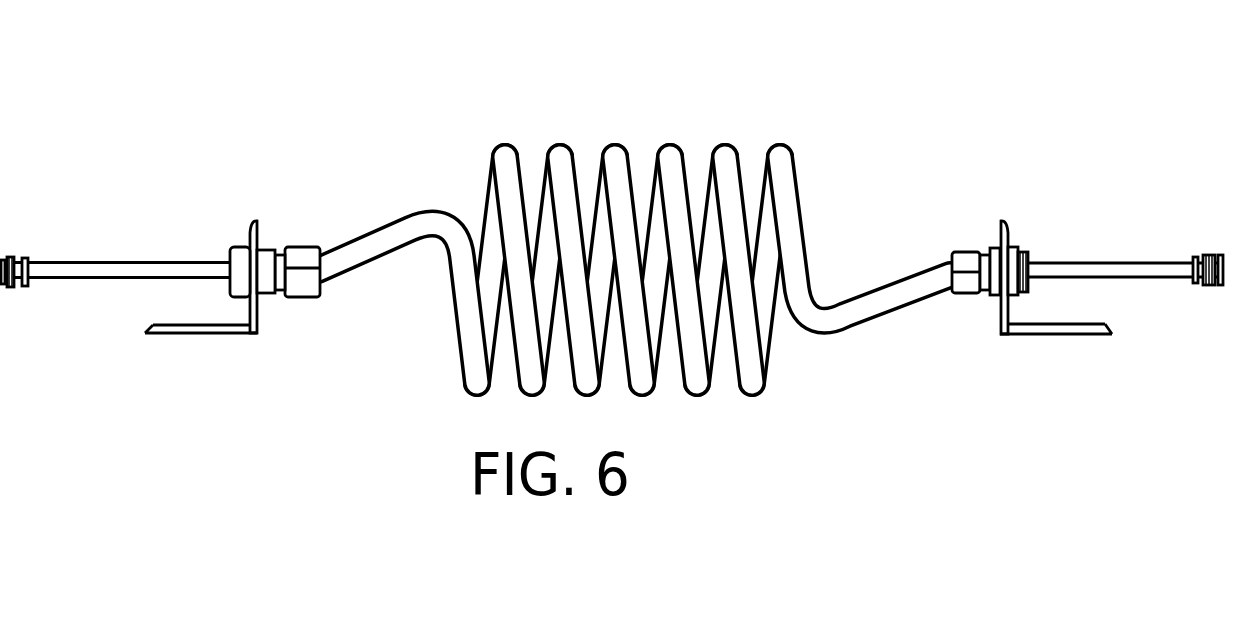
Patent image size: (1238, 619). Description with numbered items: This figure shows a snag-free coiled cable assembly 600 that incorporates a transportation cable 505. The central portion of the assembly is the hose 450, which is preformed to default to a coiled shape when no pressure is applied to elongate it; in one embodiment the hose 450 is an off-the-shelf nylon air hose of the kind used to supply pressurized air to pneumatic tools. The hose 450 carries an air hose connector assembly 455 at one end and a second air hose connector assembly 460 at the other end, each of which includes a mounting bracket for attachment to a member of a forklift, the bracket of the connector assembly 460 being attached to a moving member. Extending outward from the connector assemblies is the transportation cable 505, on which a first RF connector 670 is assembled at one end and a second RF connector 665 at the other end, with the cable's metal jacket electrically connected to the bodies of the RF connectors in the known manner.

The snag-free coiled cable assembly 600 is at (647, 66).
The hose 450 is at (783, 143).
The air hose connector assembly 455 is at (313, 217).
The second air hose connector assembly 460 is at (933, 220).
The transportation cable 505 is at (103, 232).
The first RF connector 670 is at (26, 236).
The second RF connector 665 is at (1177, 228).